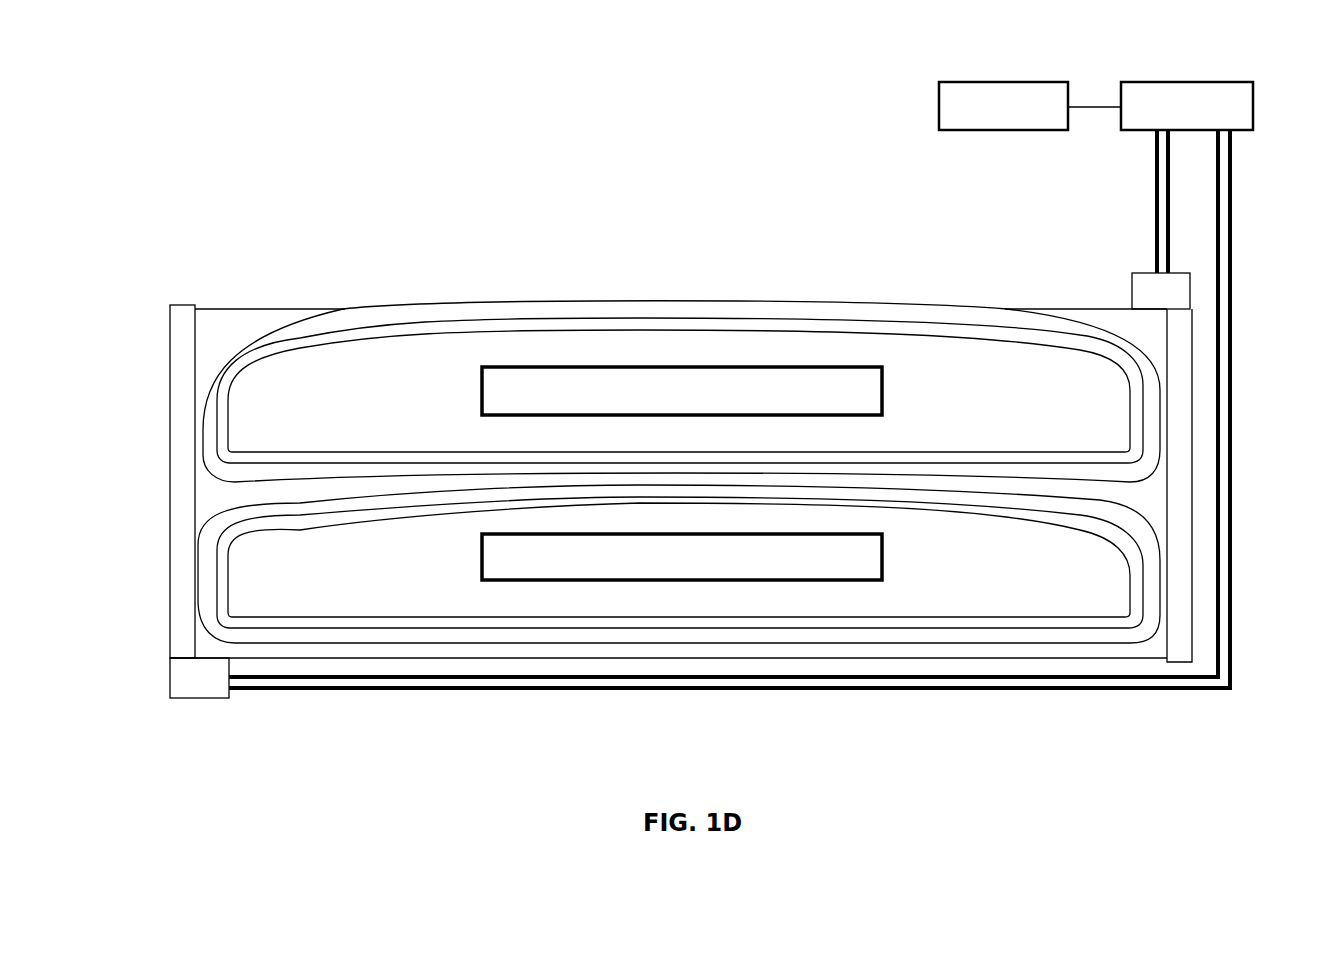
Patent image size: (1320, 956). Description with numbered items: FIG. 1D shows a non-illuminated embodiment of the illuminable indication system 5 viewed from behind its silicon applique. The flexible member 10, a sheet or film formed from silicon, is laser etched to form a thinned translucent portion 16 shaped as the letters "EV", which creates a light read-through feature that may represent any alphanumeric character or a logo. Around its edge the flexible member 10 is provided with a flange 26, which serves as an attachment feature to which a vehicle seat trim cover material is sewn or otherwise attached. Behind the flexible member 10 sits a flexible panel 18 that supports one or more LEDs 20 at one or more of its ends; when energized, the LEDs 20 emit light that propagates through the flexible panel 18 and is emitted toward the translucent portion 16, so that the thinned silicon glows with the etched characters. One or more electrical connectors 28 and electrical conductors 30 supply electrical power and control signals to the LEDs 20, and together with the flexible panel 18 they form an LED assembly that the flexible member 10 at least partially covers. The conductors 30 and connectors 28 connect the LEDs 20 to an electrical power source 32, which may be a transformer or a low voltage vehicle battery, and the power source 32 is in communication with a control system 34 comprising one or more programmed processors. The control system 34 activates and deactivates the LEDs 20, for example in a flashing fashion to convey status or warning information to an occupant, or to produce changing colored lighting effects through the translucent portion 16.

The illuminable indication system 5 is at (640, 281).
The flexible member 10 is at (945, 288).
The translucent portion 16 is at (906, 375).
The flexible panel 18 is at (222, 322).
The LEDs 20 is at (170, 483).
The flange 26 is at (1130, 360).
The electrical connectors 28 is at (199, 698).
The electrical conductors 30 is at (1157, 182).
The electrical power source 32 is at (1216, 82).
The control system 34 is at (1027, 82).